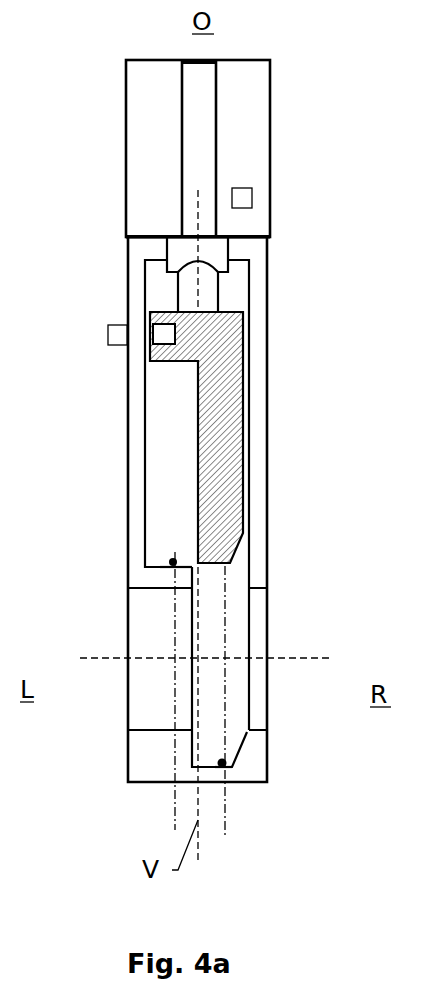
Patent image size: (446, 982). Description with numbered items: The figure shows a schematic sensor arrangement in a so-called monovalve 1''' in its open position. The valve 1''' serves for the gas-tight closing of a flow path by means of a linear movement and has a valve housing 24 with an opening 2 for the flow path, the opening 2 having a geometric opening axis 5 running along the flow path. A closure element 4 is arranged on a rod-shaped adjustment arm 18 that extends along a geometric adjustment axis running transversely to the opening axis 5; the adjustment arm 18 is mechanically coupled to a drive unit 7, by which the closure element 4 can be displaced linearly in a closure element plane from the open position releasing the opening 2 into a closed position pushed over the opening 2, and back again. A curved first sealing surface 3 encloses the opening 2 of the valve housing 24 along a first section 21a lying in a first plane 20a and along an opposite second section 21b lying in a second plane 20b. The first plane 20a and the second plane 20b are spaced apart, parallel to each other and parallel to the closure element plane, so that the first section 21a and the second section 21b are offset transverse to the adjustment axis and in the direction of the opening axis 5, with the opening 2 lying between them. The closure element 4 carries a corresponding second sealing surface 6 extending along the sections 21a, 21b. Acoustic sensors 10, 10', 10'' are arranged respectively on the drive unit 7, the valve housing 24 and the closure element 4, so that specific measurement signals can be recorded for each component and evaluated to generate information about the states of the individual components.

The monovalve 1''' is at (144, 421).
The drive unit 7 is at (162, 149).
The acoustic sensor 10 is at (298, 181).
The acoustic sensor 10' is at (78, 351).
The acoustic sensor 10'' is at (105, 311).
The adjustment arm 18 is at (267, 275).
The valve housing 24 is at (251, 495).
The closure element 4 is at (243, 437).
The second sealing surface 6 is at (210, 493).
The first sealing surface 3 is at (209, 646).
The first section 21a is at (102, 609).
The second section 21b is at (300, 786).
The opening axis 5 is at (229, 636).
The opening 2 is at (163, 510).
The first plane 20a is at (129, 701).
The second plane 20b is at (277, 717).